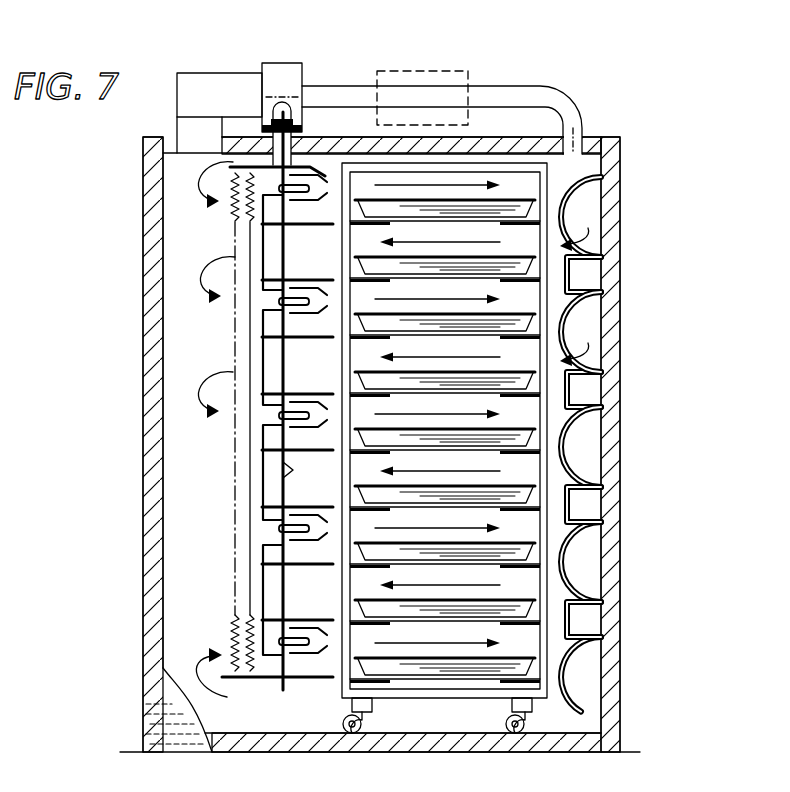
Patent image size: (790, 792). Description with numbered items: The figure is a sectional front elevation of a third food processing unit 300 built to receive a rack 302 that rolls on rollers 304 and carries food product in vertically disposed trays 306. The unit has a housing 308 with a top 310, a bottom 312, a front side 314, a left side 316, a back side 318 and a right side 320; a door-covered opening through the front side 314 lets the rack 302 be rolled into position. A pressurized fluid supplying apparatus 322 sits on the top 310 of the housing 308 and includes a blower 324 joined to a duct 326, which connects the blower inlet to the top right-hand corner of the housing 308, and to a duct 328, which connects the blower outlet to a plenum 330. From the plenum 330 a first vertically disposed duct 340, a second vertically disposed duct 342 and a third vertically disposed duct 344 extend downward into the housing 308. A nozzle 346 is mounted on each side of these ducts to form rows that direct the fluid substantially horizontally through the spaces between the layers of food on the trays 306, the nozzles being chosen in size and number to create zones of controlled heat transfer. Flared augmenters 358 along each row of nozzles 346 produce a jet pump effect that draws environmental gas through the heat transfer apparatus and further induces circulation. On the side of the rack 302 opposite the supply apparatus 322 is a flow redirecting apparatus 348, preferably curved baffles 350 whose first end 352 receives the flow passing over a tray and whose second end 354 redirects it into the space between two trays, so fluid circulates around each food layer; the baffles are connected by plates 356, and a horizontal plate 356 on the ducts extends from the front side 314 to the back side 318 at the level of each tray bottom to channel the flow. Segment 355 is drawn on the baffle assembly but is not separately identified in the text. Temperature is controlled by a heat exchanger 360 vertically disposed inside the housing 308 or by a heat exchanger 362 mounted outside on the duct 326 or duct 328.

The third processing unit 300 is at (630, 126).
The rack 302 is at (549, 172).
The rollers 304 is at (510, 722).
The trays 306 is at (457, 438).
The housing 308 is at (135, 173).
The top 310 is at (593, 137).
The bottom 312 is at (236, 733).
The front side 314 is at (143, 726).
The left side 316 is at (143, 434).
The back side 318 is at (220, 503).
The right side 320 is at (622, 401).
The pressurized fluid supplying apparatus 322 is at (277, 52).
The blower 324 is at (262, 63).
The duct 326 is at (512, 87).
The duct 328 is at (283, 106).
The plenum 330 is at (265, 122).
The first vertically disposed duct 340 is at (280, 566).
The second vertically disposed duct 342 is at (290, 490).
The third vertically disposed duct 344 is at (283, 300).
The nozzle 346 is at (302, 188).
The flow redirecting apparatus 348 is at (597, 243).
The curved baffles 350 is at (598, 348).
The first end 352 is at (582, 203).
The second end 354 is at (583, 263).
The flat segment 355 is at (570, 291).
The plates 356 is at (305, 280).
The flared augmenters 358 is at (307, 170).
The heat exchanger 360 is at (236, 614).
The heat exchanger 362 is at (468, 71).